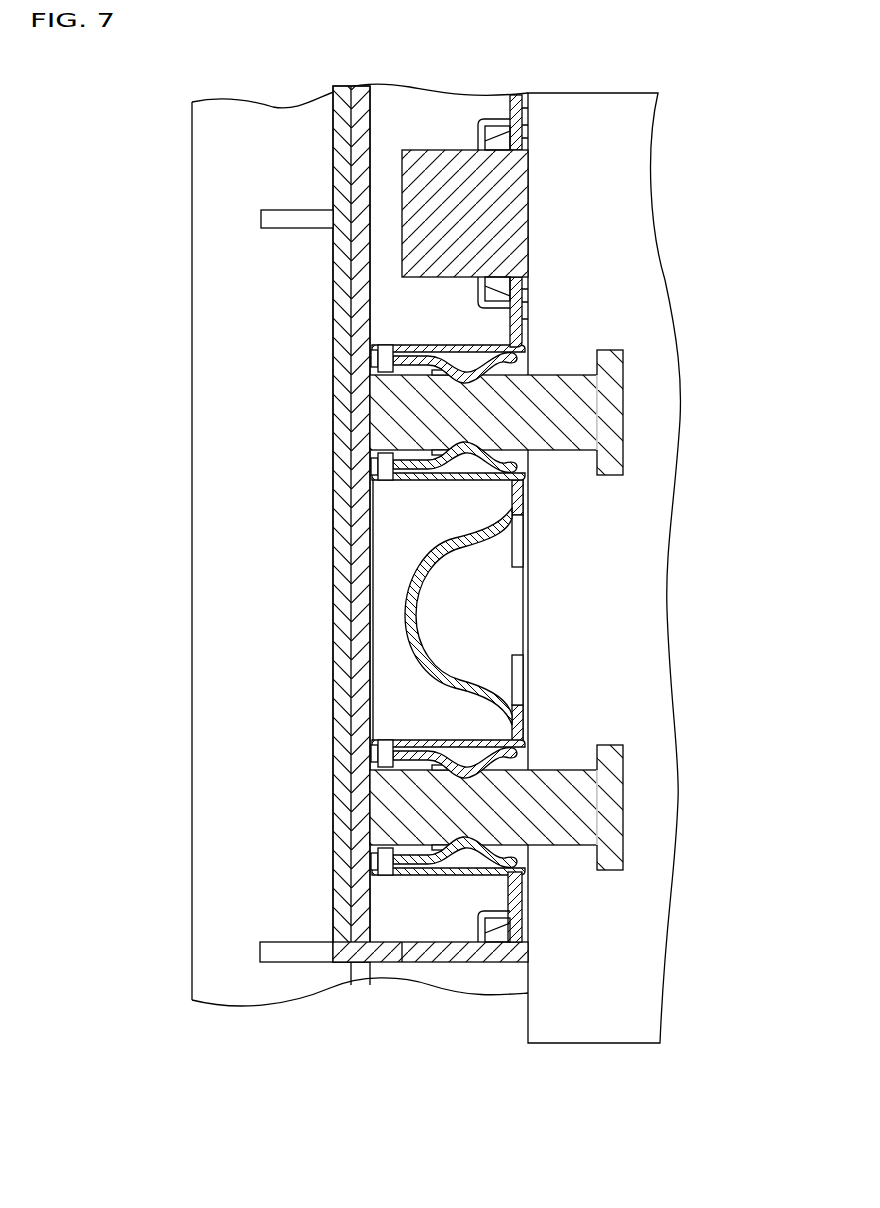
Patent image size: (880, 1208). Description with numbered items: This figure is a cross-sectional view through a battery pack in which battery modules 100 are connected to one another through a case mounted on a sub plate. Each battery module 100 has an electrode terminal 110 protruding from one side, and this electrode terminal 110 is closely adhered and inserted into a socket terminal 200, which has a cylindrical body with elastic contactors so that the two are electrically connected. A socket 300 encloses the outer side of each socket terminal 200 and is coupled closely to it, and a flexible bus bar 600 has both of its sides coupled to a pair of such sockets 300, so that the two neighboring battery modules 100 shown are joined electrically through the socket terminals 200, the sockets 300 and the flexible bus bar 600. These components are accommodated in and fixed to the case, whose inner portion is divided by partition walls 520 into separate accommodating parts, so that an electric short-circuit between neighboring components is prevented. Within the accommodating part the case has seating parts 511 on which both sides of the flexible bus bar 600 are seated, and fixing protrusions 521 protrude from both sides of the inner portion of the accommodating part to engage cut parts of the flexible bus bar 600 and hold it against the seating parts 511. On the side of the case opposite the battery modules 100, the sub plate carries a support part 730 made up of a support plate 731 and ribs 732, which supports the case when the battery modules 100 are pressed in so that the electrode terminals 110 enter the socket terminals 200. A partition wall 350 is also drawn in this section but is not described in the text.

The battery module 100 is at (528, 623).
The electrode terminal 110 is at (620, 405).
The socket terminal 200 is at (376, 370).
The socket 300 is at (416, 569).
The partition wall 350 is at (360, 596).
The seating part 511 is at (523, 283).
The partition wall 520 is at (528, 213).
The fixing protrusion 521 is at (480, 290).
The flexible bus bar 600 is at (415, 625).
The support part 730 is at (280, 524).
The support plate 731 is at (343, 842).
The rib 732 is at (268, 945).